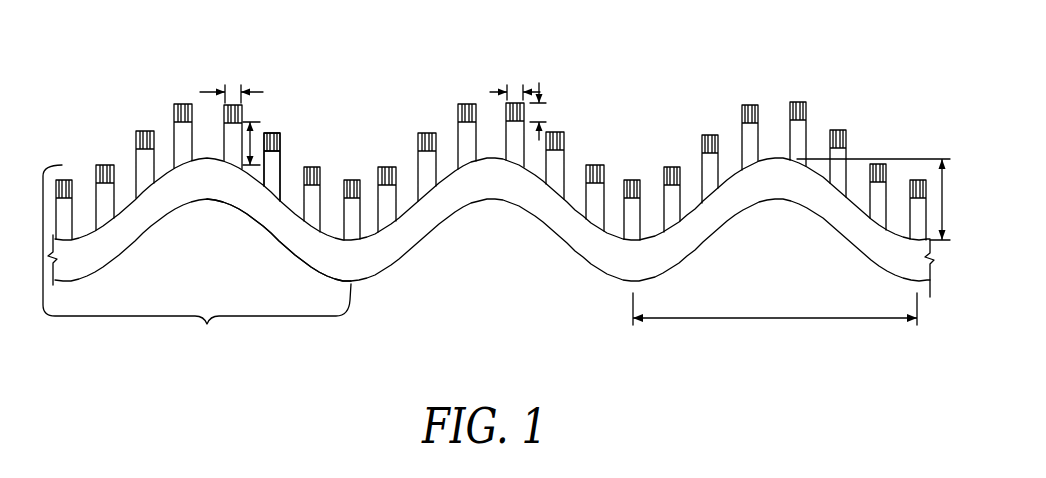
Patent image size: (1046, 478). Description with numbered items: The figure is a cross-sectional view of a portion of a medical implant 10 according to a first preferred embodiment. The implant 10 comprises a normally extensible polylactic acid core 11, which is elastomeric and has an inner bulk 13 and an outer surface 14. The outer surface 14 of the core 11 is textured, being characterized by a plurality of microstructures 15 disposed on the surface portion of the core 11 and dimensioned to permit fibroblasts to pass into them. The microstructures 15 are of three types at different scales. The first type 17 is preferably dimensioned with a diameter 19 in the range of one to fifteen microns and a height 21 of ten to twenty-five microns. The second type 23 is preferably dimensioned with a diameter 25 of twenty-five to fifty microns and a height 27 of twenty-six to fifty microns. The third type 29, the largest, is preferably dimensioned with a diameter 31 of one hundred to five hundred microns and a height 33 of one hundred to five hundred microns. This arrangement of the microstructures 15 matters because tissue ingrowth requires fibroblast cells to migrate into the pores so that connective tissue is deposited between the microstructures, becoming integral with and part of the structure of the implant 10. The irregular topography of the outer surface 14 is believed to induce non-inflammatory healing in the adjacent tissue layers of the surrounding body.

The medical implant 10 is at (652, 70).
The polylactic acid core 11 is at (355, 282).
The inner bulk 13 is at (362, 280).
The outer surface 14 is at (567, 180).
The microstructures 15 is at (207, 324).
The first type microstructure 17 is at (312, 167).
The diameter of first type 19 is at (491, 91).
The height of first type 21 is at (548, 82).
The second type microstructure 23 is at (284, 161).
The diameter of second type 25 is at (212, 90).
The height of second type 27 is at (256, 138).
The third type microstructure 29 is at (262, 330).
The diameter of third type 31 is at (782, 320).
The height of third type 33 is at (944, 186).